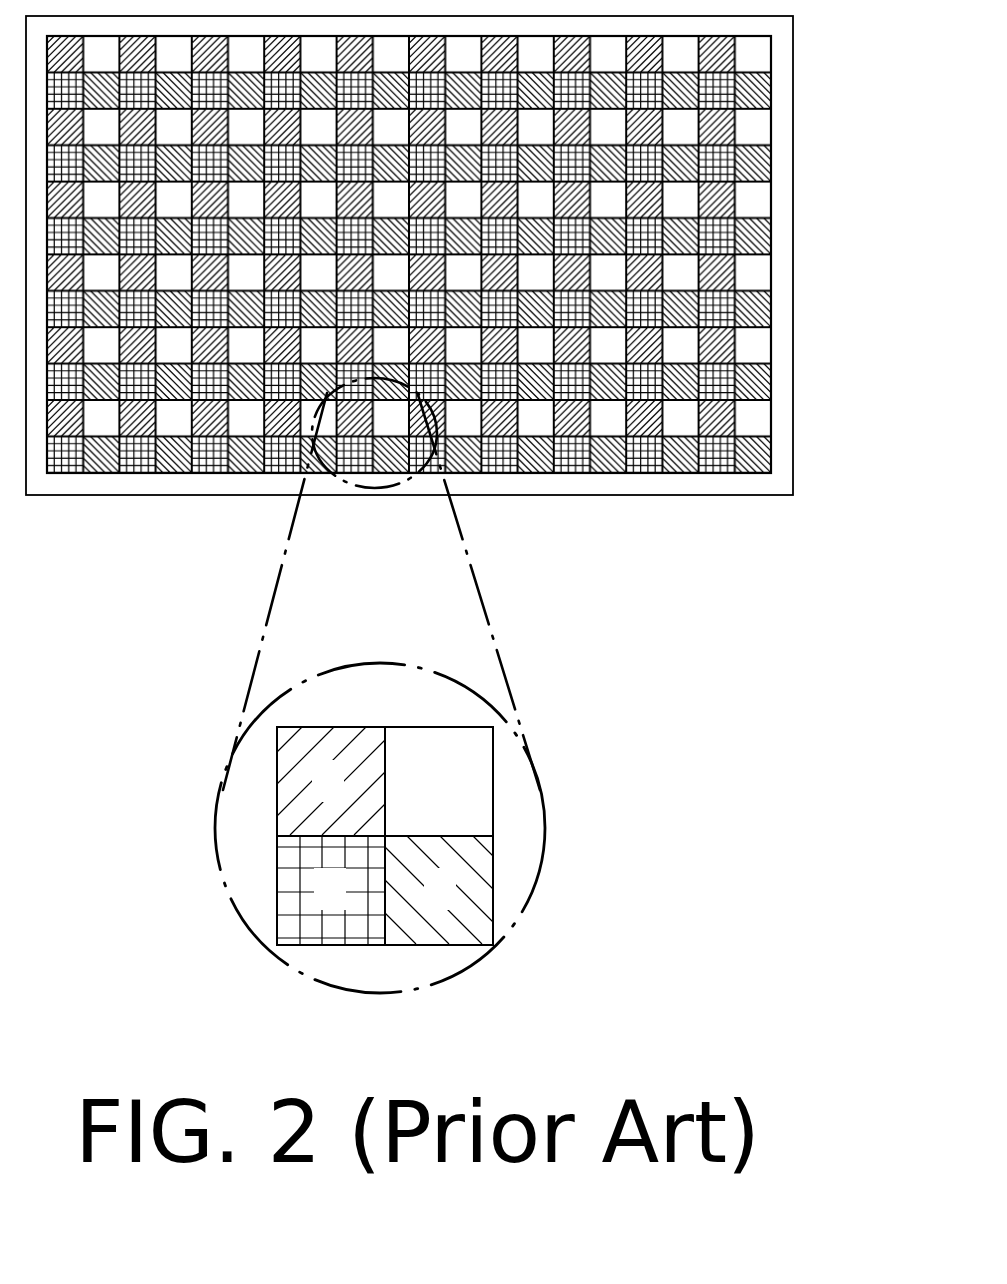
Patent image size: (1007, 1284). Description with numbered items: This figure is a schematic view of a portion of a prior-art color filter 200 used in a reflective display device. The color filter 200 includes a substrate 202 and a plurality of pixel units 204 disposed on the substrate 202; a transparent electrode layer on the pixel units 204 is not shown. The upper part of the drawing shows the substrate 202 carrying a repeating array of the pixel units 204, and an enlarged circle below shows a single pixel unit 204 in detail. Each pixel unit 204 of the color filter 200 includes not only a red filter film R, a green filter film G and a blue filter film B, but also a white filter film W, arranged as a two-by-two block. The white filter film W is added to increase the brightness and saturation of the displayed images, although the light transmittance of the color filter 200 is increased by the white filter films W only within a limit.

The color filter 200 is at (810, 745).
The substrate 202 is at (785, 458).
The pixel units 204 is at (513, 836).